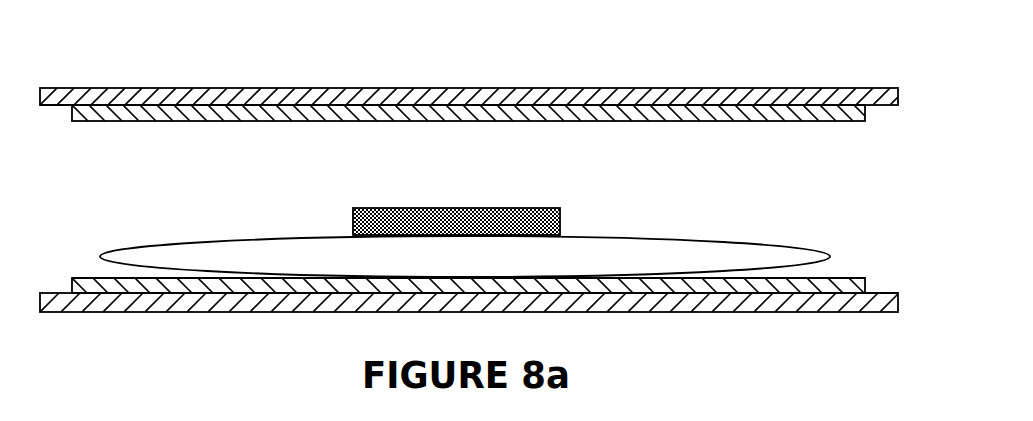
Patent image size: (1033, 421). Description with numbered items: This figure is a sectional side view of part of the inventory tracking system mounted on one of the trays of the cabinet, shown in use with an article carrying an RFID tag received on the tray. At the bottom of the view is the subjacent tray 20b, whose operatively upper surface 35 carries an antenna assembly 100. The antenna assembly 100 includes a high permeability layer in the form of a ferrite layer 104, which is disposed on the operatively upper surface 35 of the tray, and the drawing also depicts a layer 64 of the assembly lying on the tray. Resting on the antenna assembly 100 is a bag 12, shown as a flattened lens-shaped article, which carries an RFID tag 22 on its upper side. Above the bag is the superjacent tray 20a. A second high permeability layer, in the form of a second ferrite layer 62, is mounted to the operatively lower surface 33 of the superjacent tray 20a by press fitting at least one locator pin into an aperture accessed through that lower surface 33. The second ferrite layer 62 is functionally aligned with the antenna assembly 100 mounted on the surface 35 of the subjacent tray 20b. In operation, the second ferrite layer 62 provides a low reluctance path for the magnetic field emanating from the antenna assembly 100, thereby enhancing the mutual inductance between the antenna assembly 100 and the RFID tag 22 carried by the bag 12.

The superjacent tray 20a is at (118, 88).
The operatively lower surface 33 is at (60, 105).
The second ferrite layer 62 is at (832, 121).
The RFID tag 22 is at (530, 213).
The bag 12 is at (782, 245).
The lower layer 64 is at (72, 288).
The antenna assembly 100 is at (90, 277).
The ferrite layer 104 is at (187, 284).
The subjacent tray 20b is at (763, 313).
The operatively upper surface 35 is at (882, 292).